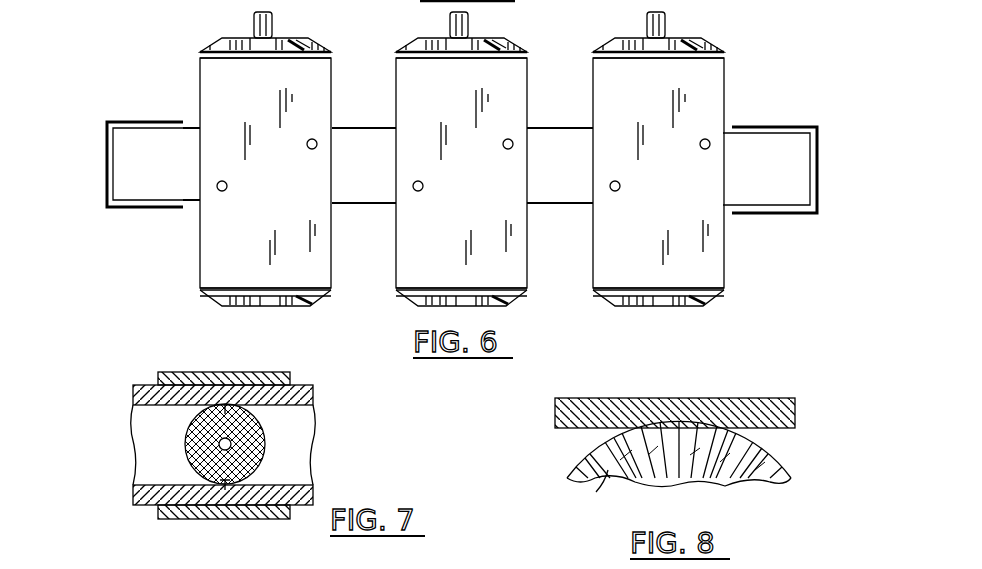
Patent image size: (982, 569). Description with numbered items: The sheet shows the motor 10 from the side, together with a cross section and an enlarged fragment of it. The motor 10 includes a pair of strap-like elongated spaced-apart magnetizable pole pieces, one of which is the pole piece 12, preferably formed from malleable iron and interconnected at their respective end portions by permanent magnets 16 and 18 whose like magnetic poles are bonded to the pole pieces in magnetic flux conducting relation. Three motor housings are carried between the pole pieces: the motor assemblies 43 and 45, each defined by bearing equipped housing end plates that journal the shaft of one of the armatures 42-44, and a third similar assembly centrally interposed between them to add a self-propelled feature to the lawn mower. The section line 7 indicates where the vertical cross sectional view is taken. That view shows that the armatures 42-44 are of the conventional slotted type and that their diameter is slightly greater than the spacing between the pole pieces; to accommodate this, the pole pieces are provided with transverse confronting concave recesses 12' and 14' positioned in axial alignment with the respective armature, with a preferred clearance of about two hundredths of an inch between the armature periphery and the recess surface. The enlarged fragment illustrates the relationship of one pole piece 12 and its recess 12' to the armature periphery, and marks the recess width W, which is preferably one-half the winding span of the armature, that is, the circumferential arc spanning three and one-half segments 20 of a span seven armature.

In FIG. 6, the motor 10 is at (712, 38).
In FIG. 6, the magnetizable pole piece 12 is at (315, 165).
In FIG. 8, the magnetizable pole piece 12 is at (680, 391).
In FIG. 7, the concave recess 12' is at (255, 414).
In FIG. 8, the concave recess 12' is at (690, 454).
In FIG. 7, the concave recess 14' is at (223, 445).
In FIG. 6, the permanent magnet 16 is at (140, 120).
In FIG. 6, the permanent magnet 18 is at (790, 125).
In FIG. 8, the segment 20 is at (608, 480).
In FIG. 7, the armatures 42-44 is at (262, 430).
In FIG. 6, the motor assembly 43 is at (510, 45).
In FIG. 6, the motor assembly 45 is at (218, 44).
In FIG. 6, the section line 7— 7 is at (415, 155).
In FIG. 8, the recess width W is at (725, 428).